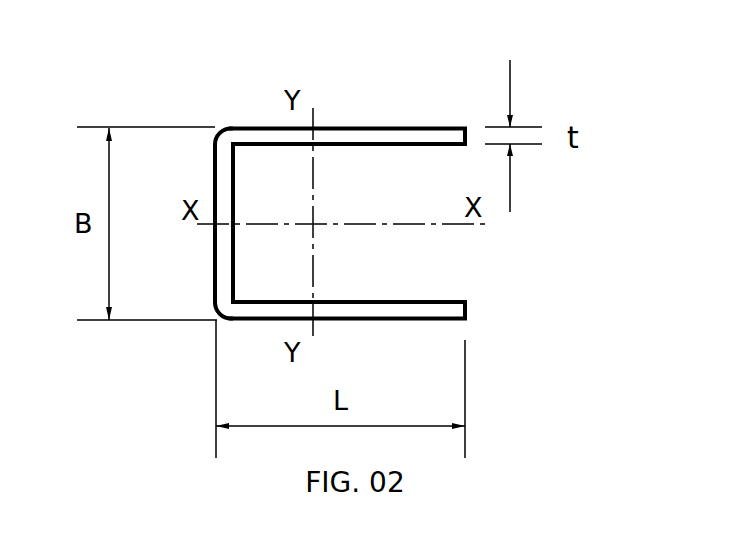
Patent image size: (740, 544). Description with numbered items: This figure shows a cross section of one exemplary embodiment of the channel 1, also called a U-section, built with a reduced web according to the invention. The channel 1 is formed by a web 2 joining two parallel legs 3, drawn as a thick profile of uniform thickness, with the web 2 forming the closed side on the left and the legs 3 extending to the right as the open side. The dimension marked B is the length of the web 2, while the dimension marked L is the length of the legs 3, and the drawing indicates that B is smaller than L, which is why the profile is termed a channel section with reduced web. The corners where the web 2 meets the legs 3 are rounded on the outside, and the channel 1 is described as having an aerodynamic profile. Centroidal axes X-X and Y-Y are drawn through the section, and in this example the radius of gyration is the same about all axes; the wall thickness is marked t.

The channel 1 is at (224, 106).
The web 2 is at (223, 249).
The legs 3 is at (374, 137).